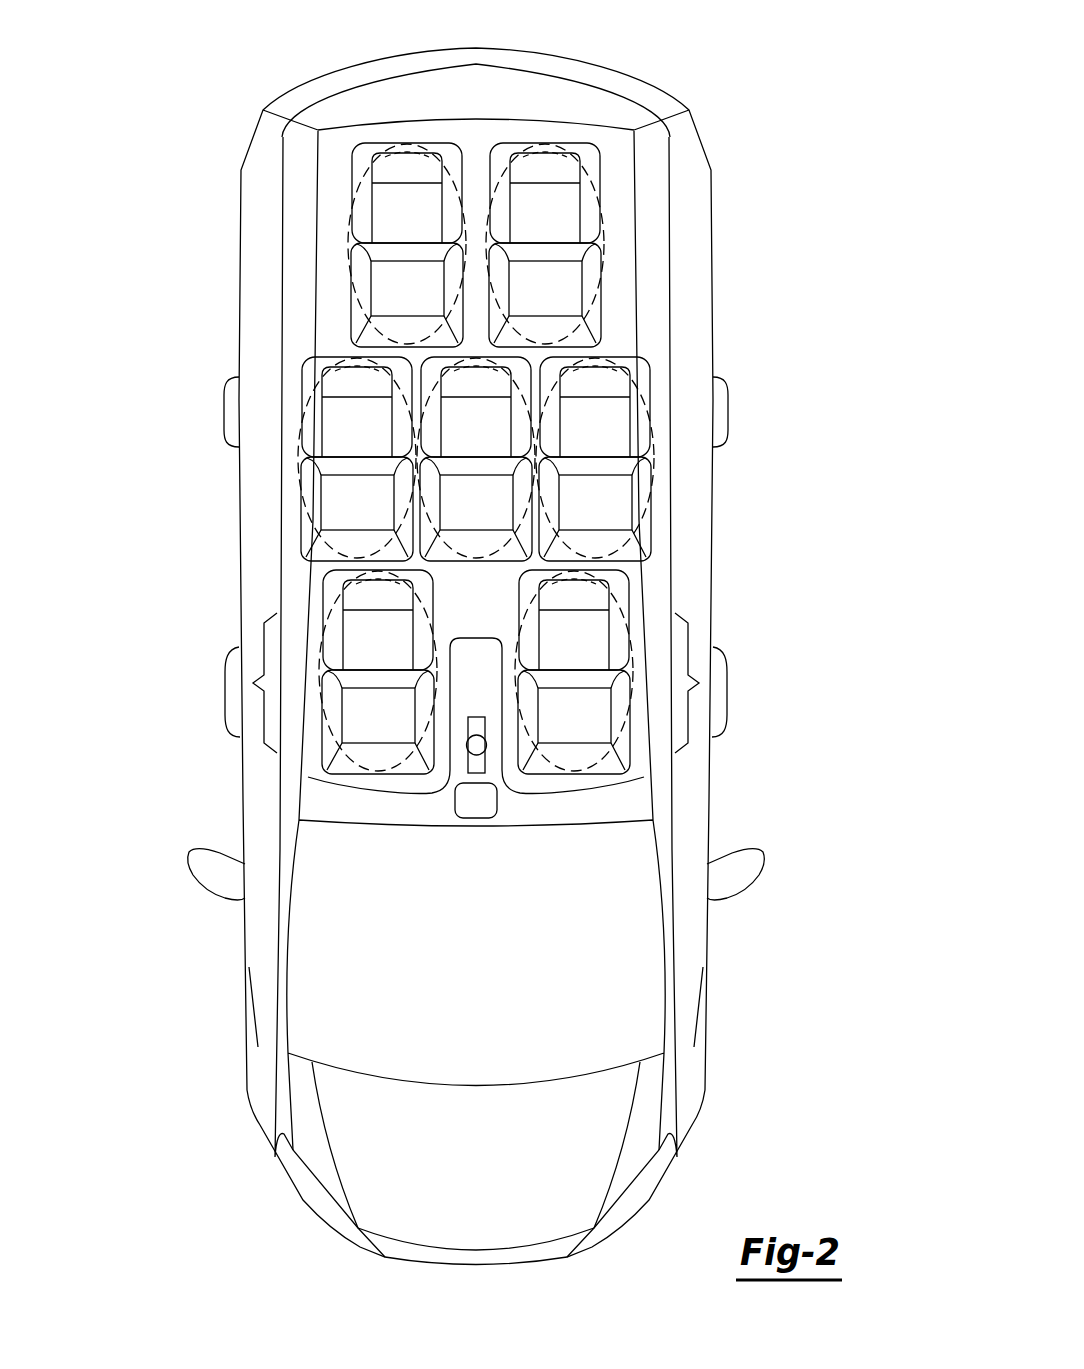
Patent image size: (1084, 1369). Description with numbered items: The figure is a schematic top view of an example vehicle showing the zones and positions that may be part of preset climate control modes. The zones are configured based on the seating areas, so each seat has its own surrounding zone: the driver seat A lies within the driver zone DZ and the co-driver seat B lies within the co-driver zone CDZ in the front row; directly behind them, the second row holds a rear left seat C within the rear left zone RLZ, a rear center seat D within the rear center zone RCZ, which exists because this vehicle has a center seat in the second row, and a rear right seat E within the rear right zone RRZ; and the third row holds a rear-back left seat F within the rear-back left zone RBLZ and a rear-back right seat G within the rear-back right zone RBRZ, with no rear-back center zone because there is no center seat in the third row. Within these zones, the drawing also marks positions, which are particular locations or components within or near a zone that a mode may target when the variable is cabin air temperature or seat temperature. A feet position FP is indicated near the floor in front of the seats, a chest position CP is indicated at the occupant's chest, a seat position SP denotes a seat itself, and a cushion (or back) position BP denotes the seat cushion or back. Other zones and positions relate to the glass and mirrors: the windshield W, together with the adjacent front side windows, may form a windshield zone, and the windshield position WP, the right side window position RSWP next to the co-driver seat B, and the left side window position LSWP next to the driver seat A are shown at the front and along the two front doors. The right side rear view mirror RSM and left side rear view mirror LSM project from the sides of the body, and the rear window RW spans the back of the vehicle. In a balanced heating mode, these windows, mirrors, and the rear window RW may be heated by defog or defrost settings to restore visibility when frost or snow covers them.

The rear window RW is at (594, 97).
The cushion (or back) position BP is at (562, 200).
The rear-back right zone RBRZ is at (347, 221).
The rear-back left zone RBLZ is at (610, 254).
The seat position SP is at (565, 285).
The rear right zone RRZ is at (300, 465).
The rear center zone RCZ is at (420, 403).
The rear left zone RLZ is at (645, 403).
The chest position CP is at (605, 440).
The feet position FP is at (625, 576).
The co-driver zone CDZ is at (340, 596).
The driver zone DZ is at (640, 765).
The right side window position RSWP is at (236, 683).
The left side window position LSWP is at (716, 683).
The windshield W is at (552, 973).
The windshield position WP is at (630, 858).
The right side rear view mirror RSM is at (222, 858).
The left side rear view mirror LSM is at (730, 858).
The driver seat A is at (562, 727).
The co-driver seat B is at (366, 727).
The rear left seat C is at (583, 514).
The rear center seat D is at (464, 514).
The rear right seat E is at (345, 514).
The rear-back left seat F is at (533, 300).
The rear-back right seat G is at (395, 300).